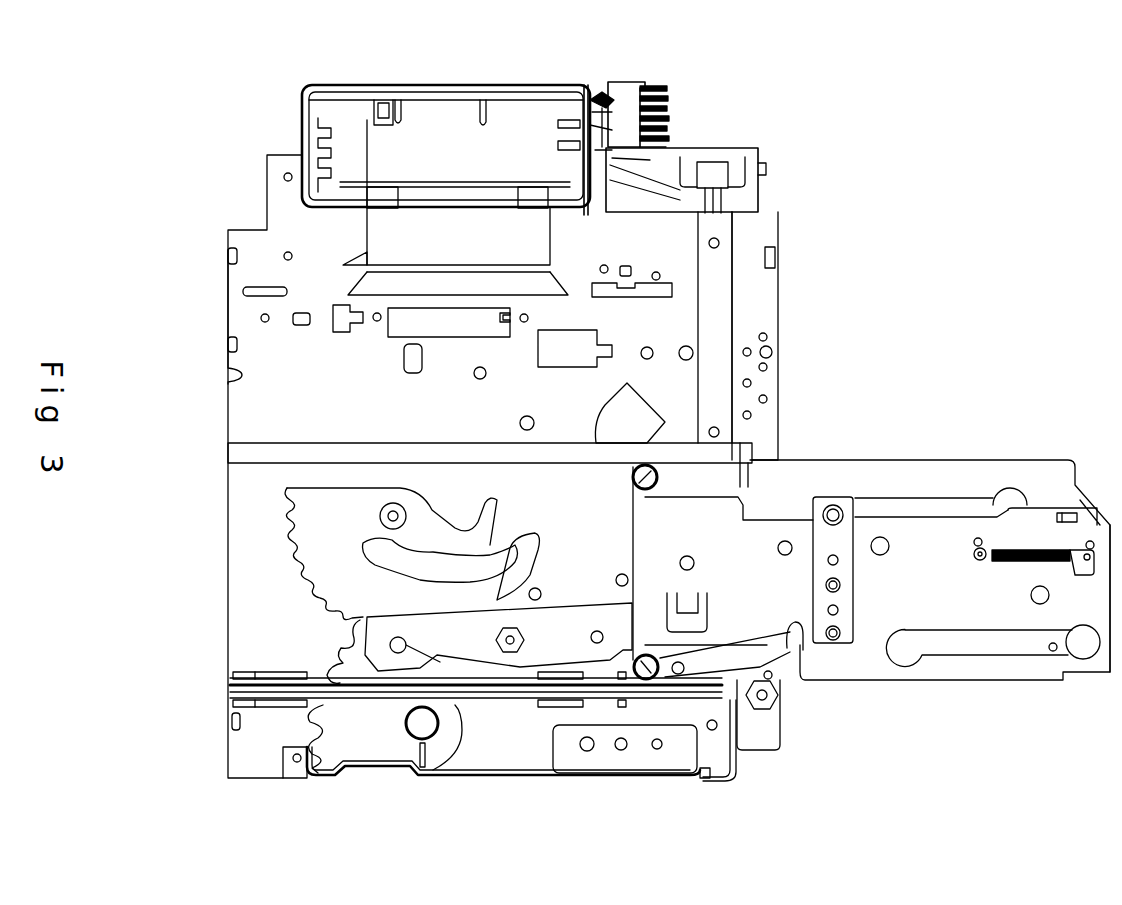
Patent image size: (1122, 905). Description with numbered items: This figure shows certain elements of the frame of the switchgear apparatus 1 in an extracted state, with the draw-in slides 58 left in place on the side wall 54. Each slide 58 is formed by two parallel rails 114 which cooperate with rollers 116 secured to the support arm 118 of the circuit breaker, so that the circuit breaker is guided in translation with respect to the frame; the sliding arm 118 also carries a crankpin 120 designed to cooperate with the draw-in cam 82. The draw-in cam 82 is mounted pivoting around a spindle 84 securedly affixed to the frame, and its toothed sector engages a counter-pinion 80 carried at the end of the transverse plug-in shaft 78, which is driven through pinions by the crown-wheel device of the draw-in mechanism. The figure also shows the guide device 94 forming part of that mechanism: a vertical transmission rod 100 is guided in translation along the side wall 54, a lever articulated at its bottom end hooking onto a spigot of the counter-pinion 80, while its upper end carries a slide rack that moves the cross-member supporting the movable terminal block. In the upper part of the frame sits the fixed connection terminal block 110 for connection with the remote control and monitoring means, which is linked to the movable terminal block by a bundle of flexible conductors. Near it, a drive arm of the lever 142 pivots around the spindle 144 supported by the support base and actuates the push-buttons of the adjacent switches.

The switching apparatus 1 is at (1113, 545).
The side wall 54 is at (288, 230).
The draw-in slides 58 is at (320, 407).
The transverse plug-in shaft 78 is at (422, 723).
The counter-pinion 80 is at (365, 738).
The draw-in cam 82 is at (330, 545).
The spindle 84 is at (381, 515).
The guide device 94 is at (734, 318).
The vertical transmission rod 100 is at (717, 265).
The fixed connection terminal block 110 is at (685, 110).
The parallel rails 114 is at (277, 457).
The rollers 116 is at (643, 482).
The support arm 118 is at (935, 548).
The crankpin 120 is at (838, 505).
The lever 142 is at (585, 150).
The spindle 144 is at (563, 160).